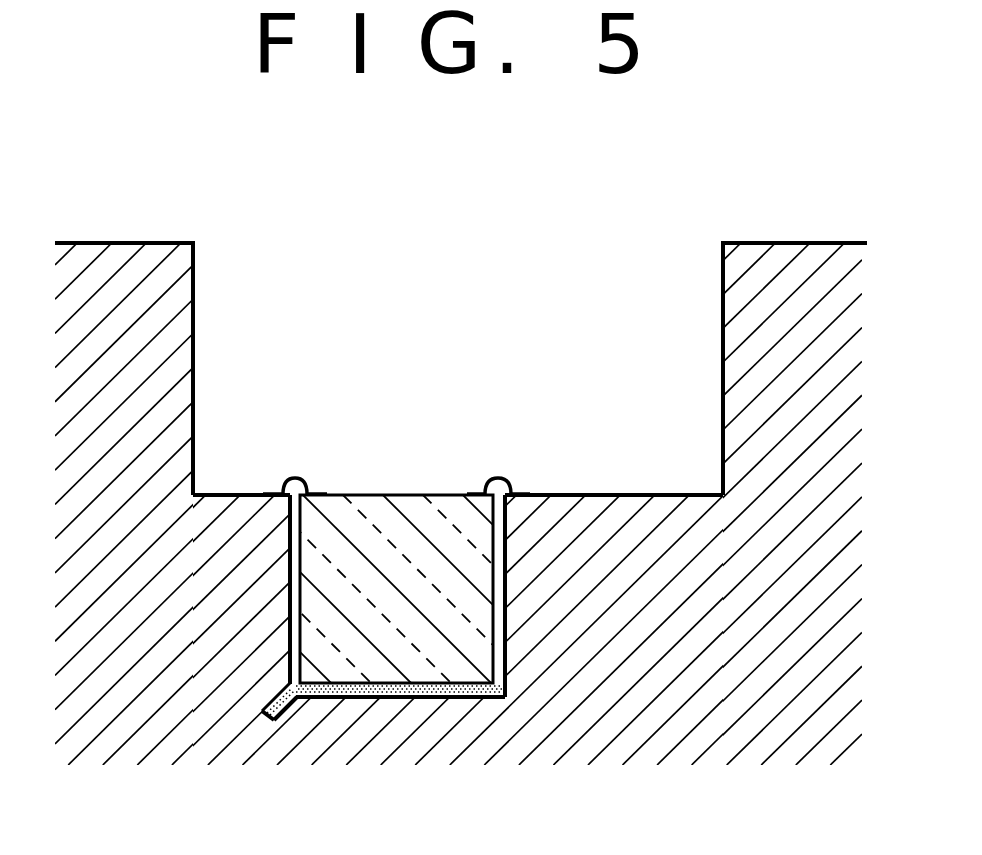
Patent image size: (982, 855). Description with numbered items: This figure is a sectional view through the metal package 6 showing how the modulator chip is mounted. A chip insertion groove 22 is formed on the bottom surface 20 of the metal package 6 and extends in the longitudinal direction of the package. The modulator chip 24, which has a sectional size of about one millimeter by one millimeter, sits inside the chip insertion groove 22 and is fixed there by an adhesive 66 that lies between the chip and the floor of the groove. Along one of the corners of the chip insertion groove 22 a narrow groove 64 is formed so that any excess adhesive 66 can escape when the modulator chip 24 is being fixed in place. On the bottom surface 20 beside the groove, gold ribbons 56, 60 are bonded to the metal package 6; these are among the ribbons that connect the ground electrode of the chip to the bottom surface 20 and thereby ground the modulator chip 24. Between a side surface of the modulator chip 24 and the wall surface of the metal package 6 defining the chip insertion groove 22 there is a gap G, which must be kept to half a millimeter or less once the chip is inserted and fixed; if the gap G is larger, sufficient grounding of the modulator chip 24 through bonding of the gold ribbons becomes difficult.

The metal package 6 is at (770, 238).
The bottom surface 20 is at (642, 497).
The chip insertion groove 22 is at (290, 561).
The modulator chip 24 is at (395, 500).
The gold ribbon 56 is at (285, 477).
The gold ribbon 60 is at (507, 478).
The narrow groove 64 is at (270, 722).
The adhesive 66 is at (506, 690).
The gap G is at (344, 637).